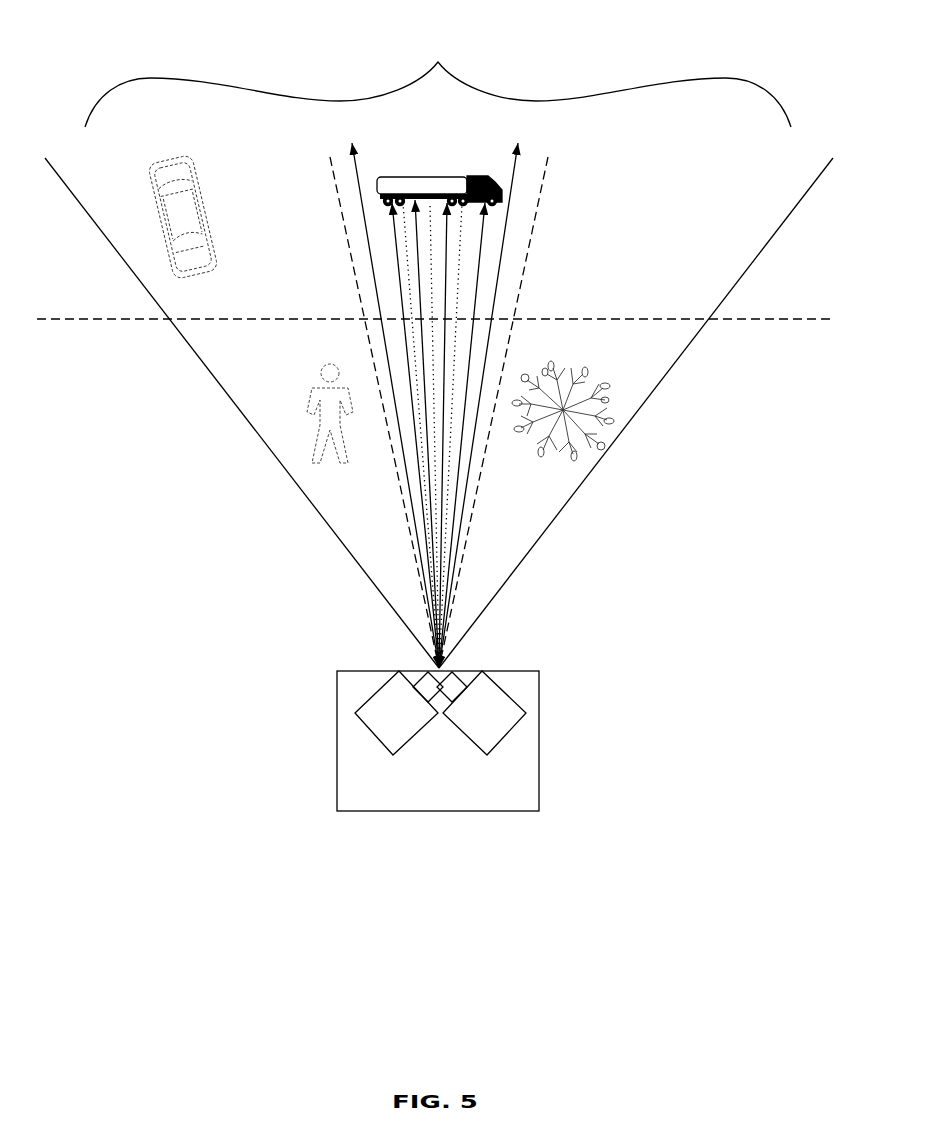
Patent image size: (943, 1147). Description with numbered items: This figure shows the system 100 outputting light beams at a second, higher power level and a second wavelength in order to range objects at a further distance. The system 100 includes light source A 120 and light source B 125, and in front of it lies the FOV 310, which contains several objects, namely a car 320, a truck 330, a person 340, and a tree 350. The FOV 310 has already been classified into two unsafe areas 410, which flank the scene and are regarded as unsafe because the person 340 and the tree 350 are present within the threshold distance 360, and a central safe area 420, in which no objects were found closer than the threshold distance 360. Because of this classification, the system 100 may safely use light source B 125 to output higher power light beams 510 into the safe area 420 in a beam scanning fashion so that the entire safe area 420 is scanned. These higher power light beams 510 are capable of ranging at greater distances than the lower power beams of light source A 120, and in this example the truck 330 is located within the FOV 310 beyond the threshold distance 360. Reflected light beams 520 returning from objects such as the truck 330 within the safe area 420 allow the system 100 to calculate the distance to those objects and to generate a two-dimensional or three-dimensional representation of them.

The system 100 is at (456, 799).
The light source A 120 is at (399, 713).
The light source B 125 is at (481, 713).
The FOV 310 is at (438, 80).
The car 320 is at (192, 158).
The truck 330 is at (392, 178).
The person 340 is at (313, 387).
The tree 350 is at (597, 382).
The distance D1 360 is at (53, 319).
The unsafe areas 410 is at (258, 390).
The safe area 420 is at (447, 494).
The higher power light beams 510 is at (358, 170).
The reflected light beams 520 is at (403, 248).